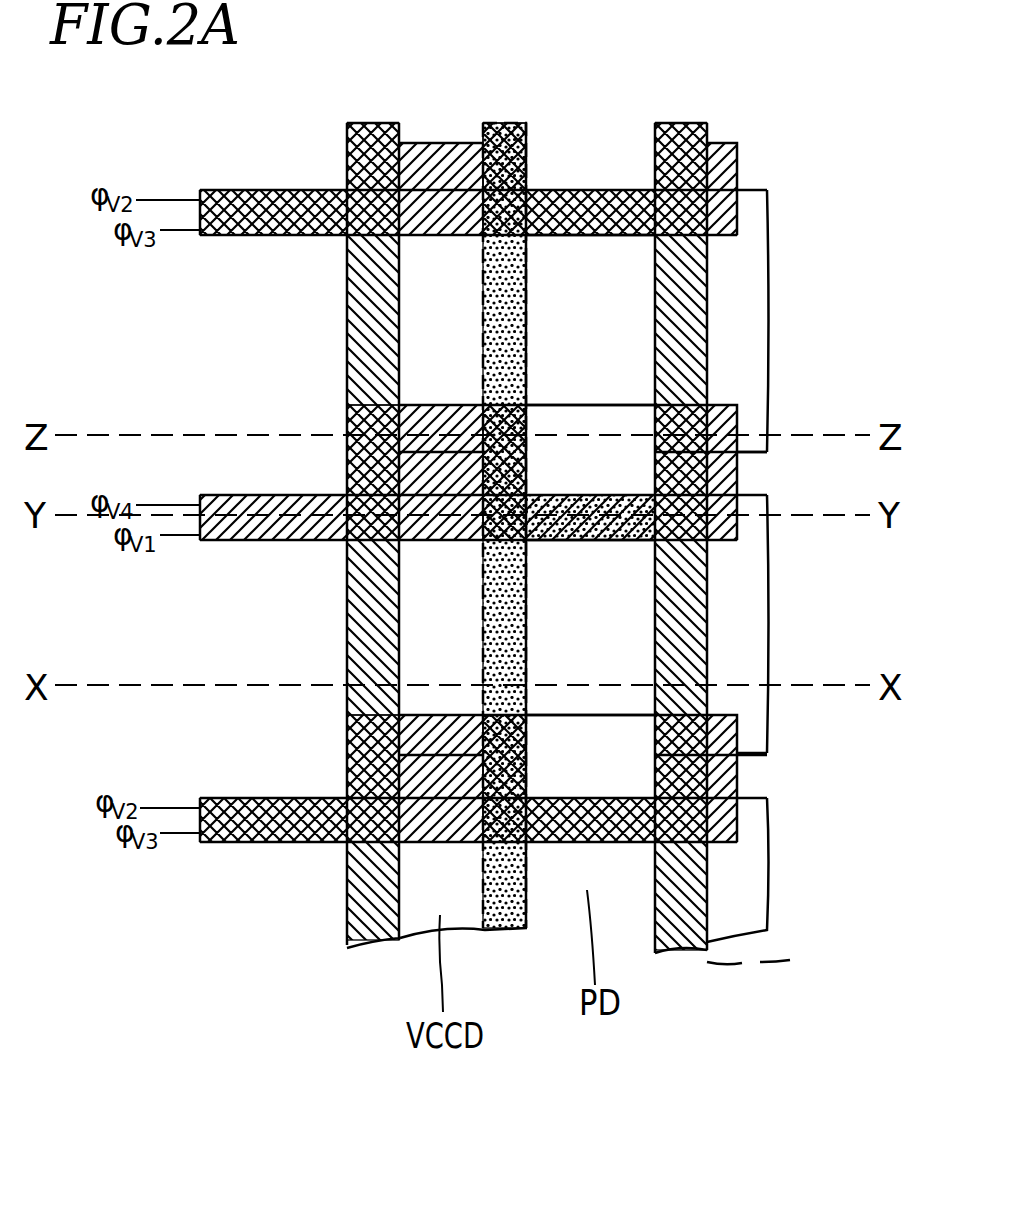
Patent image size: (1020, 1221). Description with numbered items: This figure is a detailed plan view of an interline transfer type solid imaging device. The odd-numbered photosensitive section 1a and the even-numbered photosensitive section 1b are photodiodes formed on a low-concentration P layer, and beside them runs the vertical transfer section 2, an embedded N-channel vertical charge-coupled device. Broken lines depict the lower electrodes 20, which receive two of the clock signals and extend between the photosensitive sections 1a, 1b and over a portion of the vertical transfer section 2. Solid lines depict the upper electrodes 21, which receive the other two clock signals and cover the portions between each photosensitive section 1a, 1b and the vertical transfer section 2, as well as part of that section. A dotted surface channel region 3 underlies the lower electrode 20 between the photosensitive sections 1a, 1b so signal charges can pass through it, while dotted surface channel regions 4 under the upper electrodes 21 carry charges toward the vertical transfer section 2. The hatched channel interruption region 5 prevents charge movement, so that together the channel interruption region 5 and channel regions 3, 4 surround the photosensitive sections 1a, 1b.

The photosensitive section 1a is at (590, 320).
The photosensitive section 1b is at (590, 627).
The vertical transfer section 2 is at (420, 352).
The surface channel region 3 is at (592, 495).
The surface channel region 4 is at (505, 300).
The channel interruption region 5 is at (680, 638).
The lower electrode 20 is at (210, 235).
The upper electrode 21 is at (767, 262).